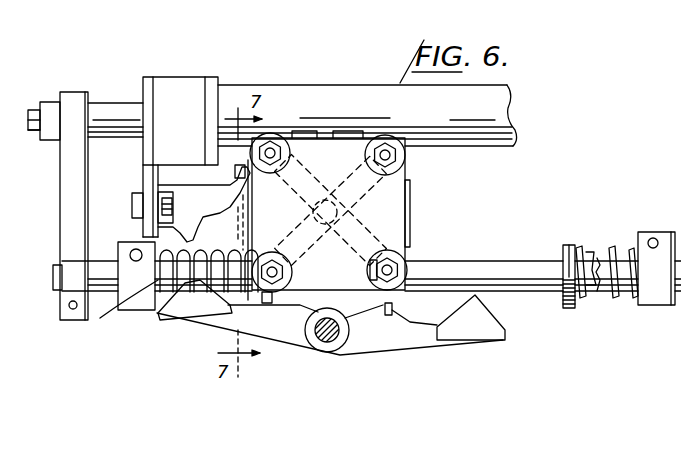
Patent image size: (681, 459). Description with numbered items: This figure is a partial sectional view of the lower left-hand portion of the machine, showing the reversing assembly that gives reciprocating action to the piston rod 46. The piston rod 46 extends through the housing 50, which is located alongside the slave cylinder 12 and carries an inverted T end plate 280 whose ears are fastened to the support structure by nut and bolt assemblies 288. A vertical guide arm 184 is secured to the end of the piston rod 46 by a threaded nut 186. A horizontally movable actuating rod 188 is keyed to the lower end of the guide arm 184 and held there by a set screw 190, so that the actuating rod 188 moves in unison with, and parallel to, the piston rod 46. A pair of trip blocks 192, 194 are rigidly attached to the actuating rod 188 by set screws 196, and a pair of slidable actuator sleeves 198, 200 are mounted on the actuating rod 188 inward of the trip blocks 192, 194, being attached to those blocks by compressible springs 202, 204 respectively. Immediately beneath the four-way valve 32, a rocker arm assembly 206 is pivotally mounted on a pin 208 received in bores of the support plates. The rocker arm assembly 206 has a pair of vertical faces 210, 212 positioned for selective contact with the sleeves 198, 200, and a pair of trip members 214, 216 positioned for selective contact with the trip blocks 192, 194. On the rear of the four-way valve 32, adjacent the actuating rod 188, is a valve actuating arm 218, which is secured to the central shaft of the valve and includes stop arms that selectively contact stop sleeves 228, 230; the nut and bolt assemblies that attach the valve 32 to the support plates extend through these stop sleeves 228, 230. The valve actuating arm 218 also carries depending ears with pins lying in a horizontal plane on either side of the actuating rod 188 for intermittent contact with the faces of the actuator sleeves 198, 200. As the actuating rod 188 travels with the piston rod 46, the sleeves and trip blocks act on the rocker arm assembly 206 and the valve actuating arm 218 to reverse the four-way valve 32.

The slave cylinder 12 is at (357, 96).
The four-way valve 32 is at (388, 186).
The piston rod 46 is at (102, 112).
The housing 50 is at (178, 88).
The vertical guide arm 184 is at (68, 158).
The threaded nut 186 is at (42, 102).
The actuating rod 188 is at (458, 272).
The set screw 190 is at (68, 305).
The trip block 192 is at (117, 250).
The trip block 194 is at (655, 302).
The set screws 196 is at (651, 239).
The actuator sleeve 198 is at (262, 298).
The actuator sleeve 200 is at (568, 245).
The compressible spring 202 is at (100, 318).
The compressible spring 204 is at (617, 299).
The rocker arm assembly 206 is at (367, 340).
The pin 208 is at (320, 343).
The vertical face 210 is at (293, 266).
The vertical face 212 is at (392, 305).
The trip member 214 is at (158, 312).
The trip member 216 is at (477, 330).
The valve actuating arm 218 is at (352, 222).
The stop sleeve 228 is at (278, 128).
The stop sleeve 230 is at (410, 128).
The inverted T end plate 280 is at (148, 76).
The nut and bolt assemblies 288 is at (133, 204).